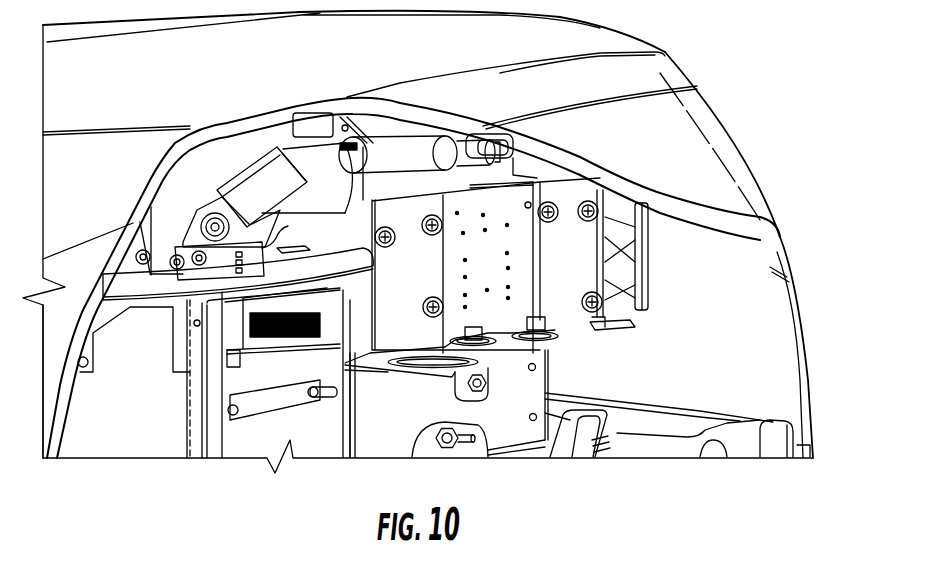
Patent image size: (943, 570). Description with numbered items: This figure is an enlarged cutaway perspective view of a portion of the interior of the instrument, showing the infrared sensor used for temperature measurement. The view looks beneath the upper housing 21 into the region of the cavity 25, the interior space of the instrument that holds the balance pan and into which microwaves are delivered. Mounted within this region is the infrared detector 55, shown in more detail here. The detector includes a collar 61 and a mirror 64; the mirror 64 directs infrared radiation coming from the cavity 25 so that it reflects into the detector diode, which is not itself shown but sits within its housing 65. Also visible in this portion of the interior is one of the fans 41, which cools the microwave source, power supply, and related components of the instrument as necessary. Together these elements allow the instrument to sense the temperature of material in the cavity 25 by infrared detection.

The upper housing 21 is at (488, 54).
The cavity 25 is at (143, 423).
The fan 41 is at (648, 262).
The infrared detector 55 is at (316, 160).
The collar 61 is at (200, 212).
The mirror 64 is at (264, 180).
The housing 65 is at (404, 177).